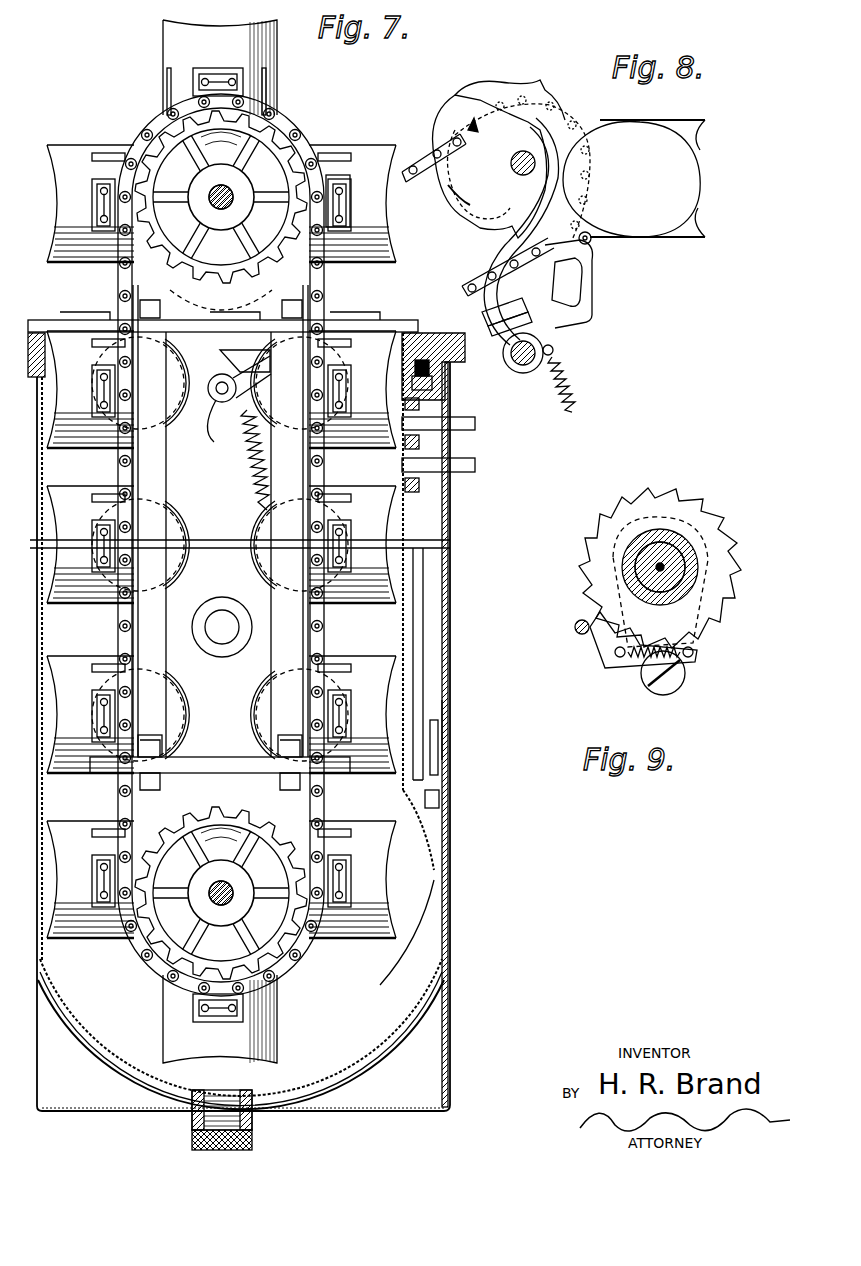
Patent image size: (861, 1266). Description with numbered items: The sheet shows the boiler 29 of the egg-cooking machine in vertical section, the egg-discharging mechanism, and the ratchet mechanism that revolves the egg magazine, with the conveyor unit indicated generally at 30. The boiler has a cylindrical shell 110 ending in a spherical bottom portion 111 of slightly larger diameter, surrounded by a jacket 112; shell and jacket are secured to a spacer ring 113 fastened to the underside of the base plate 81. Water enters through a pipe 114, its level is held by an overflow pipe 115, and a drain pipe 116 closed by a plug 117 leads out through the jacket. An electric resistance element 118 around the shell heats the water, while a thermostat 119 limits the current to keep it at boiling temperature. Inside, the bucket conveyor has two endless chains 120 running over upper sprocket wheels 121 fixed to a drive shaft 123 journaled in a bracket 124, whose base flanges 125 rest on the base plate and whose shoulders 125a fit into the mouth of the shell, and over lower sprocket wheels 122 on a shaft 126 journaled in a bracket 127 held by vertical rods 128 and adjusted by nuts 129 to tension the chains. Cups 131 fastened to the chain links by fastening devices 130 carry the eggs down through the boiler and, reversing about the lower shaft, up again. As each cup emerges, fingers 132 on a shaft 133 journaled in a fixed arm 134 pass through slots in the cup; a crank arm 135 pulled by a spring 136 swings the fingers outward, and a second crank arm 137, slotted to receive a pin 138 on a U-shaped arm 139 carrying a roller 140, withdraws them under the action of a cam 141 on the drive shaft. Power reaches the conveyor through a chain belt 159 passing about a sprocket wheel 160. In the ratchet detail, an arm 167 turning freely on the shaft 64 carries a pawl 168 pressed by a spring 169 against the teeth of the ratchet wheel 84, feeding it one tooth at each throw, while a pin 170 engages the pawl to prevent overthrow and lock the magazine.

In FIG. 7, the boiler 29 is at (448, 730).
In FIG. 7, the conveyor unit 30 is at (150, 61).
In FIG. 9, the shaft 64 is at (700, 555).
In FIG. 7, the base plate 81 is at (425, 332).
In FIG. 9, the ratchet wheel 84 is at (733, 553).
In FIG. 7, the cylindrical shell 110 is at (410, 586).
In FIG. 7, the spherical bottom portion 111 is at (400, 1000).
In FIG. 7, the jacket 112 is at (430, 604).
In FIG. 7, the spacer ring 113 is at (428, 380).
In FIG. 7, the pipe 114 is at (470, 426).
In FIG. 7, the overflow pipe 115 is at (470, 466).
In FIG. 7, the drain pipe 116 is at (196, 1118).
In FIG. 7, the plug 117 is at (254, 1140).
In FIG. 7, the electric resistance element 118 is at (40, 458).
In FIG. 7, the thermostat 119 is at (222, 604).
In FIG. 7, the endless chains 120 is at (322, 288).
In FIG. 7, the upper sprocket wheels 121 is at (302, 142).
In FIG. 7, the lower sprocket wheels 122 is at (272, 962).
In FIG. 7, the drive shaft 123 is at (219, 196).
In FIG. 8, the drive shaft 123 is at (516, 160).
In FIG. 7, the bracket 124 is at (185, 298).
In FIG. 7, the base flanges 125 is at (398, 328).
In FIG. 7, the shoulders 125a is at (370, 340).
In FIG. 7, the shaft 126 is at (221, 880).
In FIG. 7, the bracket 127 is at (214, 758).
In FIG. 7, the vertical rods 128 is at (160, 457).
In FIG. 7, the nuts 129 is at (150, 745).
In FIG. 7, the fastening devices 130 is at (348, 205).
In FIG. 7, the cup 131 is at (272, 60).
In FIG. 8, the cup 131 is at (693, 126).
In FIG. 7, the fingers 132 is at (206, 378).
In FIG. 8, the fingers 132 is at (547, 190).
In FIG. 7, the shaft 133 is at (332, 162).
In FIG. 8, the shaft 133 is at (642, 120).
In FIG. 7, the fixed arm 134 is at (222, 402).
In FIG. 8, the crank arm 135 is at (552, 350).
In FIG. 8, the spring 136 is at (566, 392).
In FIG. 8, the second crank arm 137 is at (527, 294).
In FIG. 8, the pin 138 is at (526, 312).
In FIG. 8, the U-shaped arm 139 is at (586, 282).
In FIG. 8, the roller 140 is at (586, 244).
In FIG. 8, the cam 141 is at (476, 224).
In FIG. 8, the chain belt 159 is at (538, 92).
In FIG. 8, the sprocket wheel 160 is at (462, 212).
In FIG. 9, the arm 167 is at (712, 600).
In FIG. 9, the pawl 168 is at (610, 652).
In FIG. 9, the spring 169 is at (645, 665).
In FIG. 9, the pin 170 is at (581, 635).